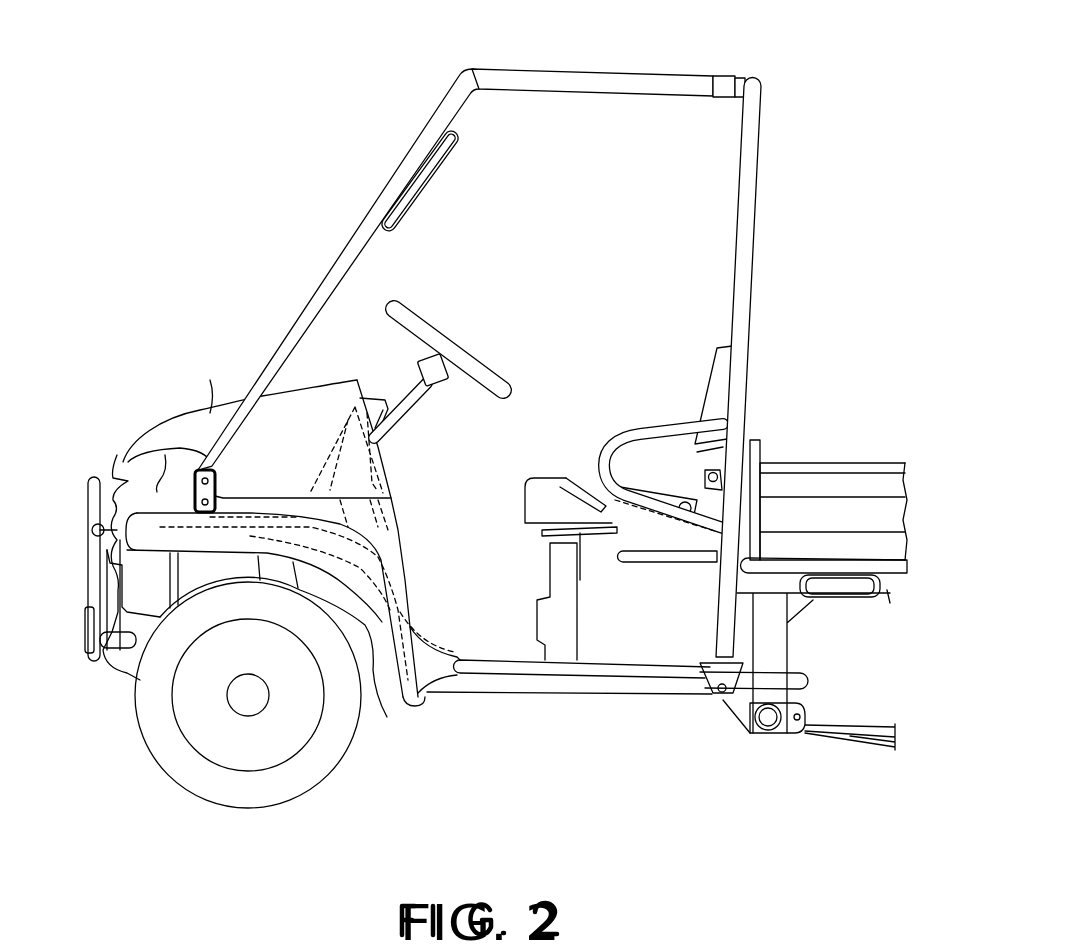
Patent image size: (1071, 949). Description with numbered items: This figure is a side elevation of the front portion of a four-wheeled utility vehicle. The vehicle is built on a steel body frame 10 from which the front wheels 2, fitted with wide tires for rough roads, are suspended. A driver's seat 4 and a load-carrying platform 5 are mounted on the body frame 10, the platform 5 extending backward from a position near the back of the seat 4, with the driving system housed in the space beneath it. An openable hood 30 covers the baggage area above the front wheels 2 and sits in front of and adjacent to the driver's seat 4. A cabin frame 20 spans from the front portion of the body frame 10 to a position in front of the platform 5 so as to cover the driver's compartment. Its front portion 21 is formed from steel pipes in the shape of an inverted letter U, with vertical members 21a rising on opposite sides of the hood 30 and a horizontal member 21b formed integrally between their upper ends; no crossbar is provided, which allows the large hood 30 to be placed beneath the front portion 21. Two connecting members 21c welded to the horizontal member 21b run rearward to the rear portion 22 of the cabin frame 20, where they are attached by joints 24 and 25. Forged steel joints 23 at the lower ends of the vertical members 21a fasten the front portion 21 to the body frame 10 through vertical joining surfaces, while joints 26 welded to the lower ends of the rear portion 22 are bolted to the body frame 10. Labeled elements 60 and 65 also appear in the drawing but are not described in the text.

The front wheels 2 is at (172, 750).
The driver's seat 4 is at (542, 480).
The load-carrying platform 5 is at (832, 487).
The body frame 10 is at (590, 672).
The cabin frame 20 is at (516, 330).
The front portion 21 is at (362, 209).
The vertical members 21a is at (493, 169).
The horizontal member 21b is at (419, 181).
The connecting members 21c is at (553, 80).
The rear portion 22 is at (752, 165).
The joints 23 is at (218, 490).
The joint 24 is at (722, 80).
The joint 25 is at (740, 75).
The joints 26 is at (715, 672).
The hood 30 is at (210, 412).
The fender / side body panel 60 is at (378, 697).
The front guard 65 is at (122, 480).